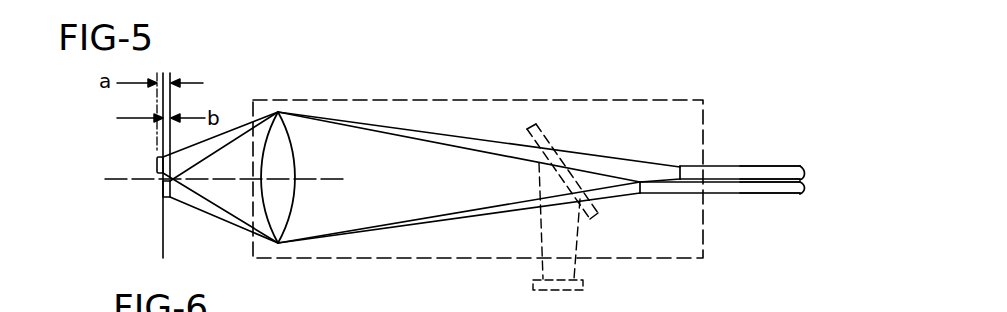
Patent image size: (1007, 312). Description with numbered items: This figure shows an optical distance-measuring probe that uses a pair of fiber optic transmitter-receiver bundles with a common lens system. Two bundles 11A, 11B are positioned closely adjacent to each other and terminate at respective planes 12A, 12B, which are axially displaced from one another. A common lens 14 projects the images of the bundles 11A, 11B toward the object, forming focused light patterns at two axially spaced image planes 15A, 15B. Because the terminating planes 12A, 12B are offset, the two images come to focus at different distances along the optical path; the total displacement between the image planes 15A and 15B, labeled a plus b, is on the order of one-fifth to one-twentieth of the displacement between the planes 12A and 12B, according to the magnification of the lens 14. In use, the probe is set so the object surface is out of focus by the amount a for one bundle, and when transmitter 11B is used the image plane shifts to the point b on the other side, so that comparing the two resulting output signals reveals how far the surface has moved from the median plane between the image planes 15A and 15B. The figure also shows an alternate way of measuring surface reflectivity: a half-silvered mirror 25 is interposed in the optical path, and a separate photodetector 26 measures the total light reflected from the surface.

The fiber optic bundle 11A is at (773, 194).
The fiber optic bundle 11B is at (758, 166).
The terminating plane of bundle 11A 12A is at (633, 197).
The terminating plane of bundle 11B 12B is at (673, 170).
The common lens 14 is at (283, 143).
The image plane 15A is at (157, 163).
The image plane 15B is at (166, 192).
The half-silvered mirror 25 is at (534, 125).
The photodetector 26 is at (564, 290).